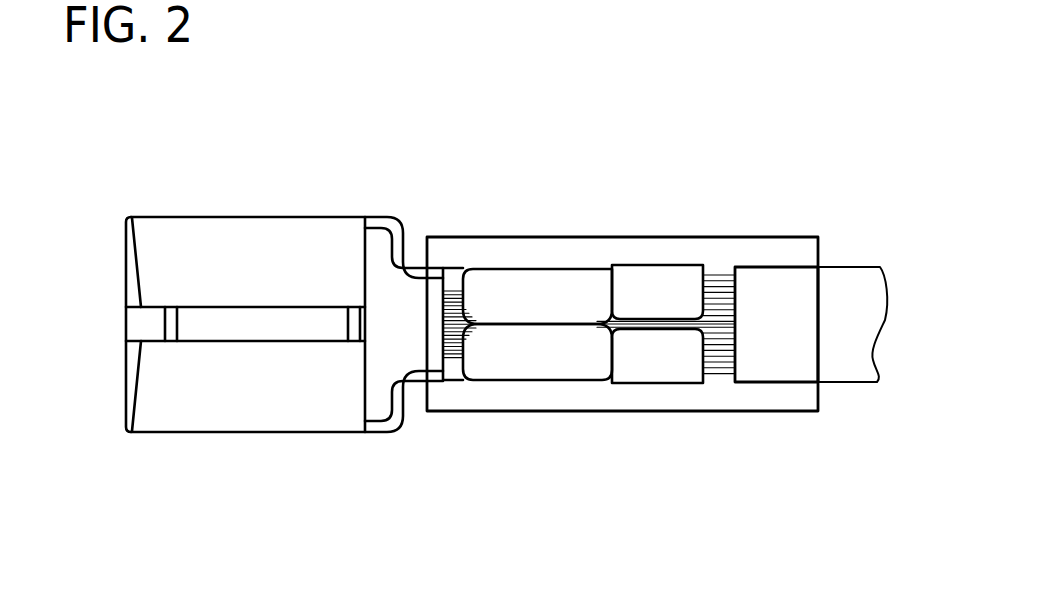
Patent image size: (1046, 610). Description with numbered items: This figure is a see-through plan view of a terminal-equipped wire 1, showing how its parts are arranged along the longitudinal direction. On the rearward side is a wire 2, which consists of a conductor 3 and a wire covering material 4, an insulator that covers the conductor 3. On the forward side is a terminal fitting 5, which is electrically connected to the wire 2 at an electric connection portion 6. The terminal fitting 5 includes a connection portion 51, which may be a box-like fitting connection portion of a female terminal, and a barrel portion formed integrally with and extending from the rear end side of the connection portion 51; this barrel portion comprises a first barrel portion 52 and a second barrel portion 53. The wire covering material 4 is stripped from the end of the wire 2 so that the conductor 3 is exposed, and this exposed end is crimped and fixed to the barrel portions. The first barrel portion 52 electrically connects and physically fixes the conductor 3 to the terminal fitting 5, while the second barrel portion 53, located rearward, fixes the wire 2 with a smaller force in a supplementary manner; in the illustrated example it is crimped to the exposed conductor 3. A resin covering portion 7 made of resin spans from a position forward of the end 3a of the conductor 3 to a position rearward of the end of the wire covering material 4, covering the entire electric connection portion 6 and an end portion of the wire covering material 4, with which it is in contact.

The terminal-equipped wire 1 is at (755, 132).
The wire 2 is at (835, 248).
The conductor 3 is at (613, 335).
The end of the conductor 3a is at (441, 332).
The wire covering material 4 is at (843, 368).
The terminal fitting 5 is at (376, 440).
The connection portion 51 is at (248, 235).
The first barrel portion 52 is at (528, 360).
The second barrel portion 53 is at (655, 370).
The electric connection portion 6 is at (588, 268).
The resin covering portion 7 is at (536, 237).